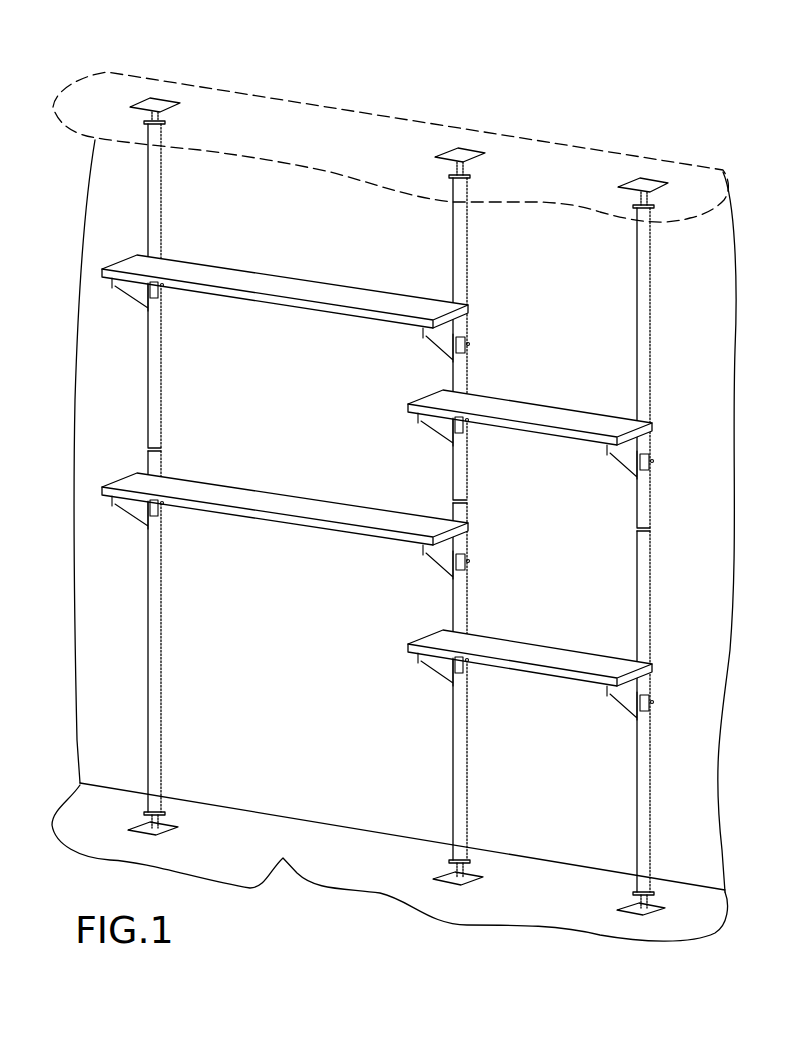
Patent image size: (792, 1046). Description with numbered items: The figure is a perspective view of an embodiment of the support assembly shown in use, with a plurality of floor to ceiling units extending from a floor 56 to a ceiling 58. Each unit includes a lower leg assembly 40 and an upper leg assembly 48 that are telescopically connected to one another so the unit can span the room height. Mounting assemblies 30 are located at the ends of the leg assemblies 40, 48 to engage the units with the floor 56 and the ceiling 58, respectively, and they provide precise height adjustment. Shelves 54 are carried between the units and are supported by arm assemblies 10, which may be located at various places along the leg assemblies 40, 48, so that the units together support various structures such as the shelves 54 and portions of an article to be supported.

The arm assembly 10 is at (416, 441).
The mounting assembly 30 is at (189, 80).
The lower leg assembly 40 is at (193, 762).
The upper leg assembly 48 is at (186, 228).
The shelf 54 is at (282, 286).
The floor 56 is at (272, 877).
The ceiling 58 is at (341, 124).